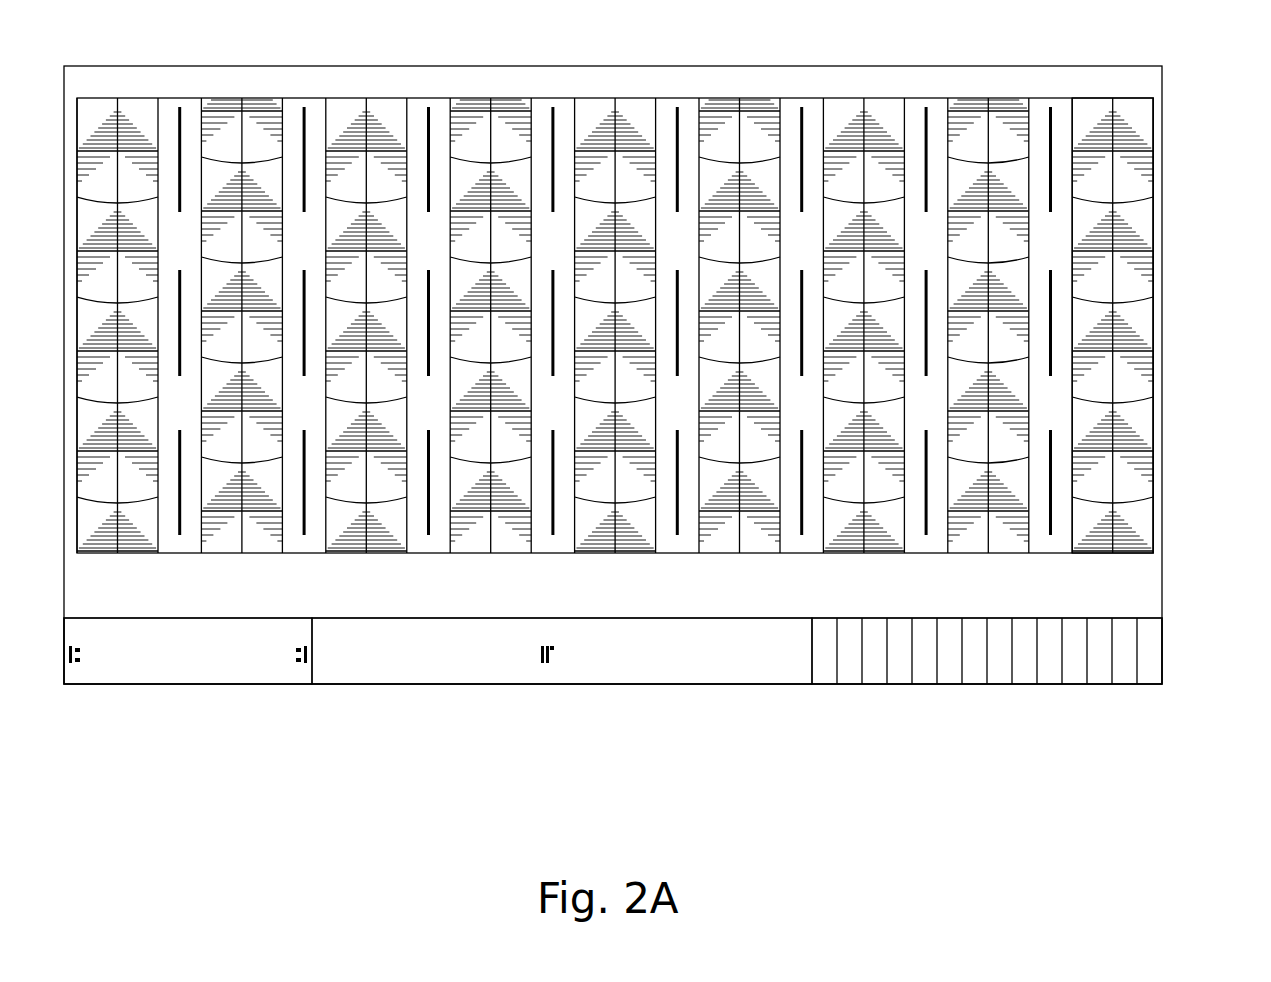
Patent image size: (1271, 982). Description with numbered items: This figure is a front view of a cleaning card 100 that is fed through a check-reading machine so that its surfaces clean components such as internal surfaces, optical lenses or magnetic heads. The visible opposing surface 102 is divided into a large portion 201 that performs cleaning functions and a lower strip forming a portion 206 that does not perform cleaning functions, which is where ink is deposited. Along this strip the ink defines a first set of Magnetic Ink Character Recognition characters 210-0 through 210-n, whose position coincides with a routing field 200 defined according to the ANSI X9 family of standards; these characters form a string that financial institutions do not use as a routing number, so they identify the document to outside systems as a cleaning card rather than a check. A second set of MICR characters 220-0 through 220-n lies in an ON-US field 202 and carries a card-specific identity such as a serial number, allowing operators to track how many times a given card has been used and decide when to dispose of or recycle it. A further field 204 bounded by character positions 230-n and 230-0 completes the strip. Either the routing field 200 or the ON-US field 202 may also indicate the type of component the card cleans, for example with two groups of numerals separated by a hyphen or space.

The cleaning card 100 is at (357, 65).
The opposing surface 102 is at (707, 83).
The portion that performs cleaning functions 201 is at (1130, 192).
The routing field 200 is at (312, 684).
The ON-US field 202 is at (812, 684).
The third field 204 is at (1162, 684).
The portion that does not perform cleaning functions 206 is at (1164, 553).
The MICR character of the first set 210-n is at (70, 618).
The MICR character of the first set 210-0 is at (299, 618).
The MICR character of the second set 220-n is at (325, 618).
The MICR character of the second set 220-0 is at (800, 618).
The third field leftmost character position 230-n is at (825, 618).
The third field rightmost character position 230-0 is at (1147, 618).